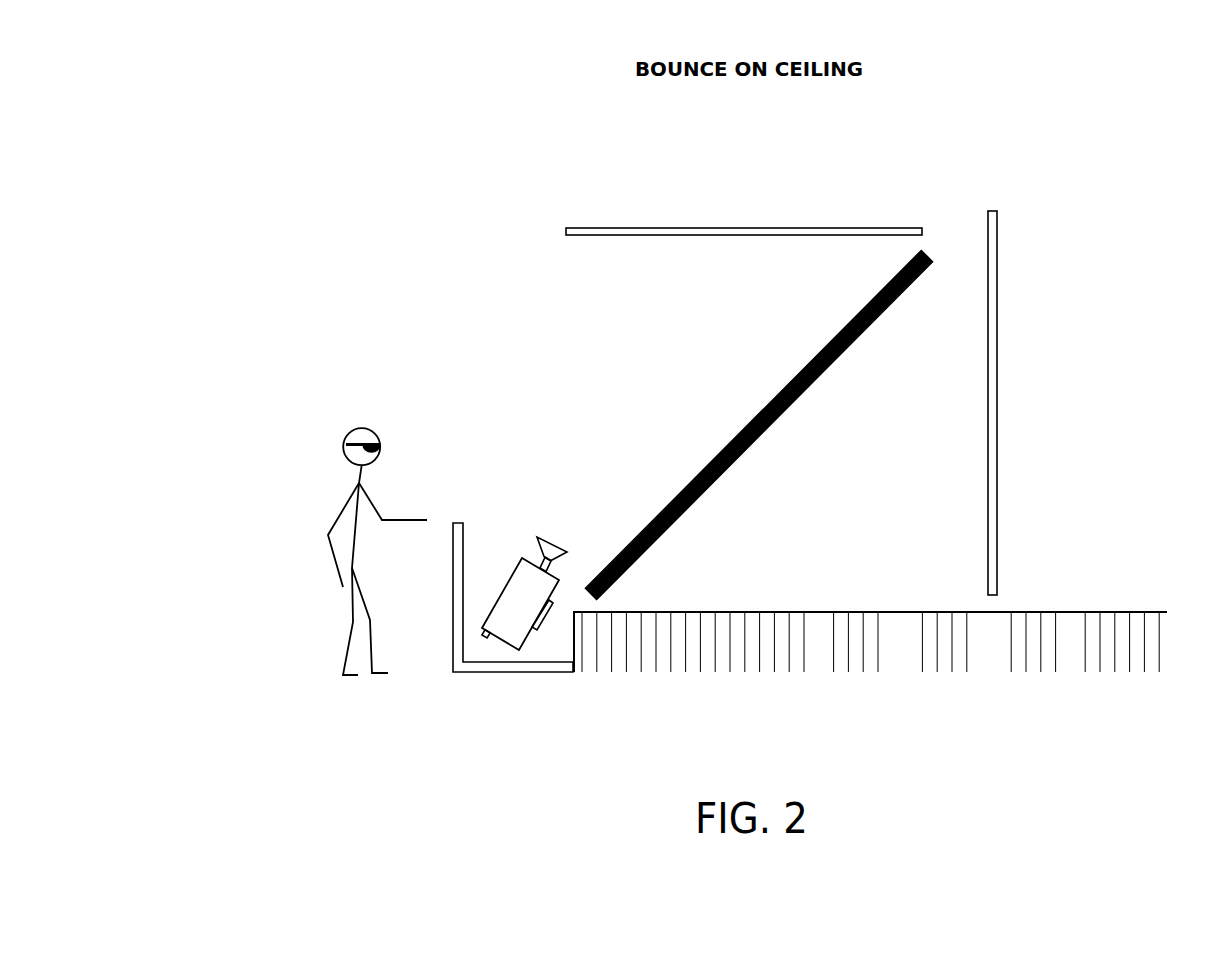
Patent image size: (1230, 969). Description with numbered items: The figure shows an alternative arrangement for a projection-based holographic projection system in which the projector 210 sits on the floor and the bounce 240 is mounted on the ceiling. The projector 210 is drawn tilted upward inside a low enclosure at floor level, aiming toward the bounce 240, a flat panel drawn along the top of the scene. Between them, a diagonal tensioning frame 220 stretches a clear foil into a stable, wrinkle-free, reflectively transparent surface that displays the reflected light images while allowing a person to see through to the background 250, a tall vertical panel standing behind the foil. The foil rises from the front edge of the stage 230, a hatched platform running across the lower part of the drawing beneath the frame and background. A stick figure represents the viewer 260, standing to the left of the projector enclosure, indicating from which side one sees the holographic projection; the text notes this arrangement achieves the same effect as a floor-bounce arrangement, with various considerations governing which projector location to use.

The projector 210 is at (502, 650).
The tensioning frame 220 is at (757, 448).
The stage 230 is at (781, 603).
The bounce 240 is at (822, 218).
The background 250 is at (1007, 333).
The viewer 260 is at (328, 495).